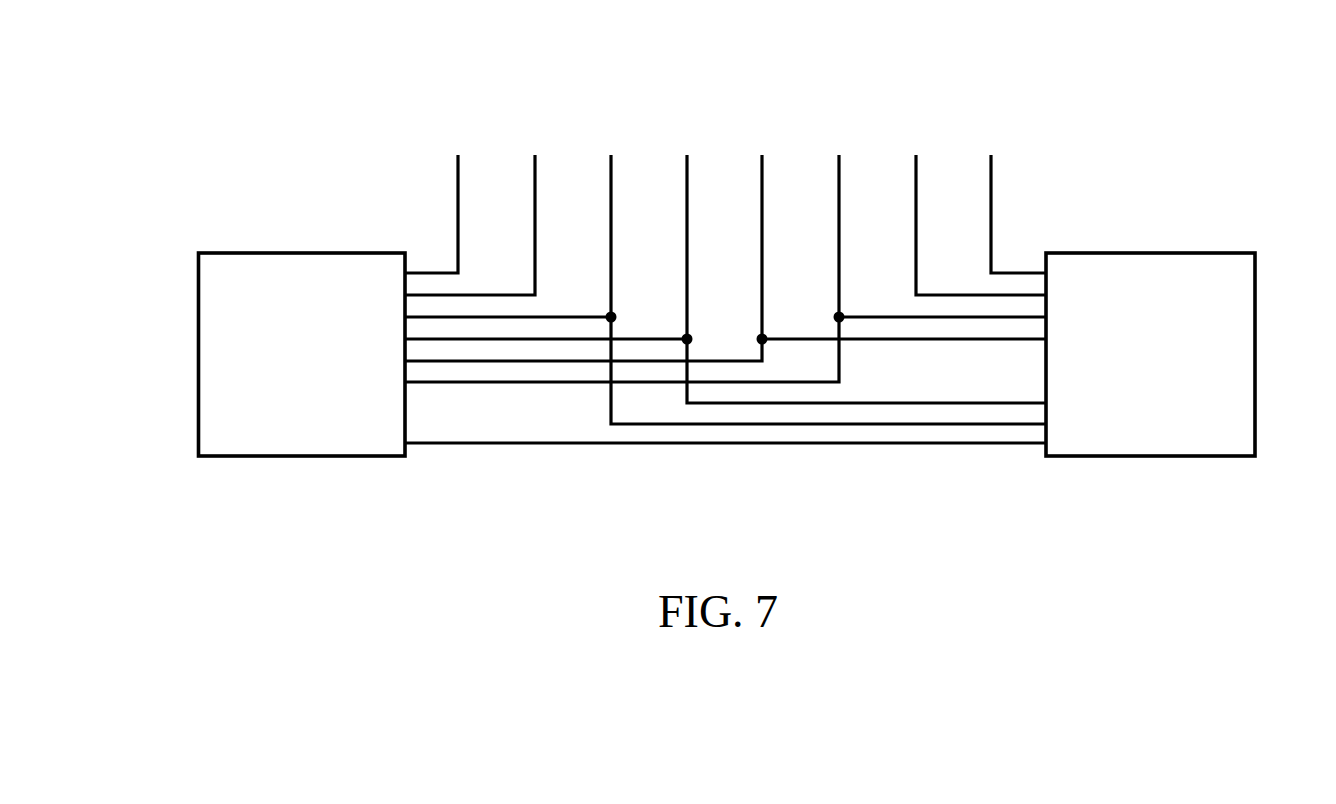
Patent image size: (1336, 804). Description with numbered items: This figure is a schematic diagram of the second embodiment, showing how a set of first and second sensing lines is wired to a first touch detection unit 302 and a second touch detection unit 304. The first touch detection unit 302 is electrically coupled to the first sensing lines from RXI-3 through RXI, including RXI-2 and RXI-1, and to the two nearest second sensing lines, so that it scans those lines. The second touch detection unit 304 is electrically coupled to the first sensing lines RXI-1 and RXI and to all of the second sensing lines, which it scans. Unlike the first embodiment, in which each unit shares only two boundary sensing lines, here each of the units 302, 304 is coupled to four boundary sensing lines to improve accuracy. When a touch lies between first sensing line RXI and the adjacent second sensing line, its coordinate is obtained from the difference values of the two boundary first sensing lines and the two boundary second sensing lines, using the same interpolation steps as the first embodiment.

The first touch detection unit 302 is at (300, 457).
The second touch detection unit 304 is at (1148, 457).
The first sensing line RXI-3 is at (439, 186).
The first sensing line RXI-2 is at (486, 160).
The first sensing line RXI-1 is at (725, 262).
The first sensing line RXI is at (725, 214).